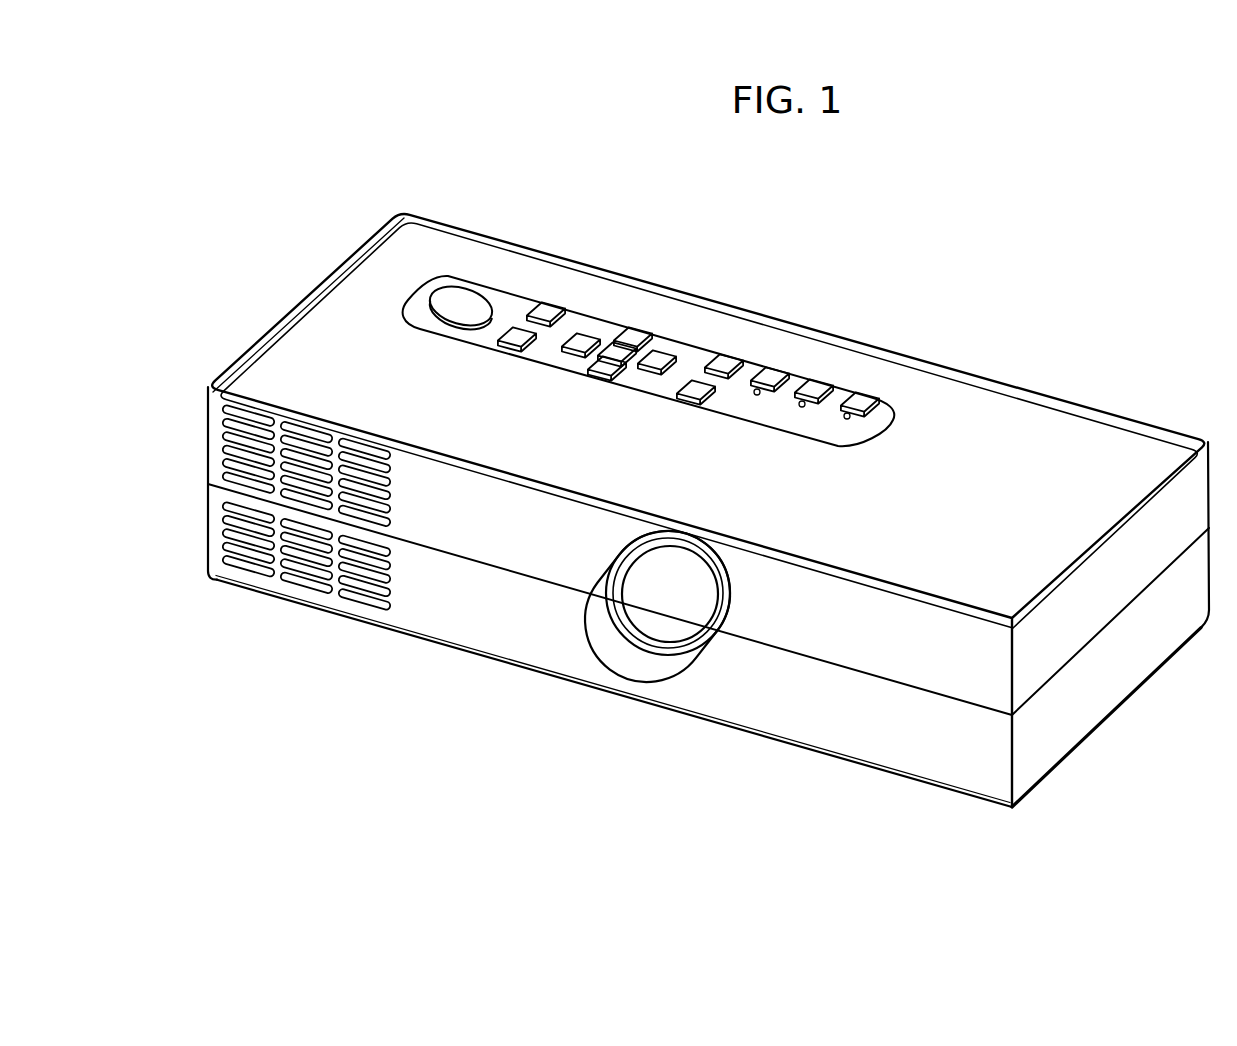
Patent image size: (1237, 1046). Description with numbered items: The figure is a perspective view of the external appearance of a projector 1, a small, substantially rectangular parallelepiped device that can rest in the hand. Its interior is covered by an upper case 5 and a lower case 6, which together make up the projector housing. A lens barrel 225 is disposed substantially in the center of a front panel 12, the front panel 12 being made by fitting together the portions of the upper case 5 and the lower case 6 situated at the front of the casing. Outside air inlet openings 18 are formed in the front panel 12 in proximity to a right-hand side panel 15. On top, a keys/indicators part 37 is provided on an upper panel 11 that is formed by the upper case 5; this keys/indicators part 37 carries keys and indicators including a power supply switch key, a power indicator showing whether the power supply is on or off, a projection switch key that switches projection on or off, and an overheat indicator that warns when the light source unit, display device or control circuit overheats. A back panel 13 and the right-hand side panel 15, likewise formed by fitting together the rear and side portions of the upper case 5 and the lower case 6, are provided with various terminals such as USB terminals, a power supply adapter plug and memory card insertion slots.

The projector 1 is at (750, 263).
The upper case 5 is at (373, 252).
The lower case 6 is at (843, 740).
The upper panel 11 is at (355, 308).
The front panel 12 is at (513, 628).
The back panel 13 is at (823, 327).
The right-hand side panel 15 is at (255, 333).
The outside air inlet openings 18 is at (313, 582).
The keys/indicators part 37 is at (641, 326).
The lens barrel 225 is at (640, 650).